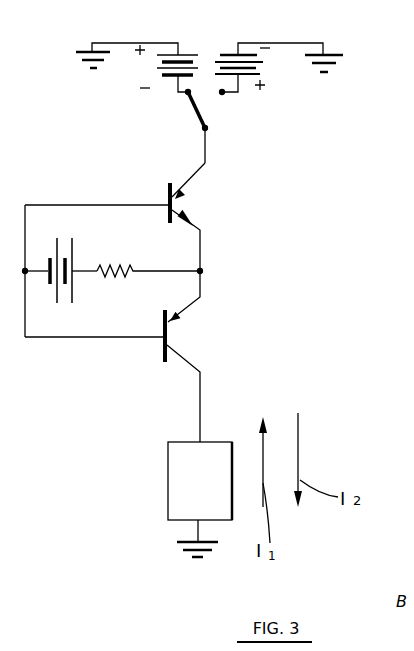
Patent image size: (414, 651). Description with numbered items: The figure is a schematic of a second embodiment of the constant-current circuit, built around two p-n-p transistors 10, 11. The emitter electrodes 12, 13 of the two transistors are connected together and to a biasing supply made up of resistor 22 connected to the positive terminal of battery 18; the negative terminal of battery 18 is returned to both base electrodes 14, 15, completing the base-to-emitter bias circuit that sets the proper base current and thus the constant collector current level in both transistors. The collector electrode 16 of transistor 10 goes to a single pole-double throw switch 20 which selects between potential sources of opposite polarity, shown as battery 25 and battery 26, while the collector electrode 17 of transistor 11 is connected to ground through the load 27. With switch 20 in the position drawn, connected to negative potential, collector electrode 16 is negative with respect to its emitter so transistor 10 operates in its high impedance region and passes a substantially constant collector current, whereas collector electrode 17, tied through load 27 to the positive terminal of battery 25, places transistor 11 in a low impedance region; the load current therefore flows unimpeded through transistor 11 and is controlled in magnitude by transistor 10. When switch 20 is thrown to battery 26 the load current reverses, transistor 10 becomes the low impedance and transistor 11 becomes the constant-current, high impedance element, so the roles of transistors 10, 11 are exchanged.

The transistor 10 is at (186, 197).
The transistor 11 is at (192, 336).
The emitter electrode 12 is at (197, 225).
The emitter electrode 13 is at (180, 320).
The base electrode 14 is at (167, 200).
The base electrode 15 is at (162, 337).
The collector electrode 16 is at (183, 182).
The collector electrode 17 is at (188, 364).
The battery 18 is at (74, 262).
The single pole-double throw switch 20 is at (205, 112).
The resistor 22 is at (117, 268).
The battery 25 is at (157, 60).
The battery 26 is at (260, 72).
The load 27 is at (168, 475).